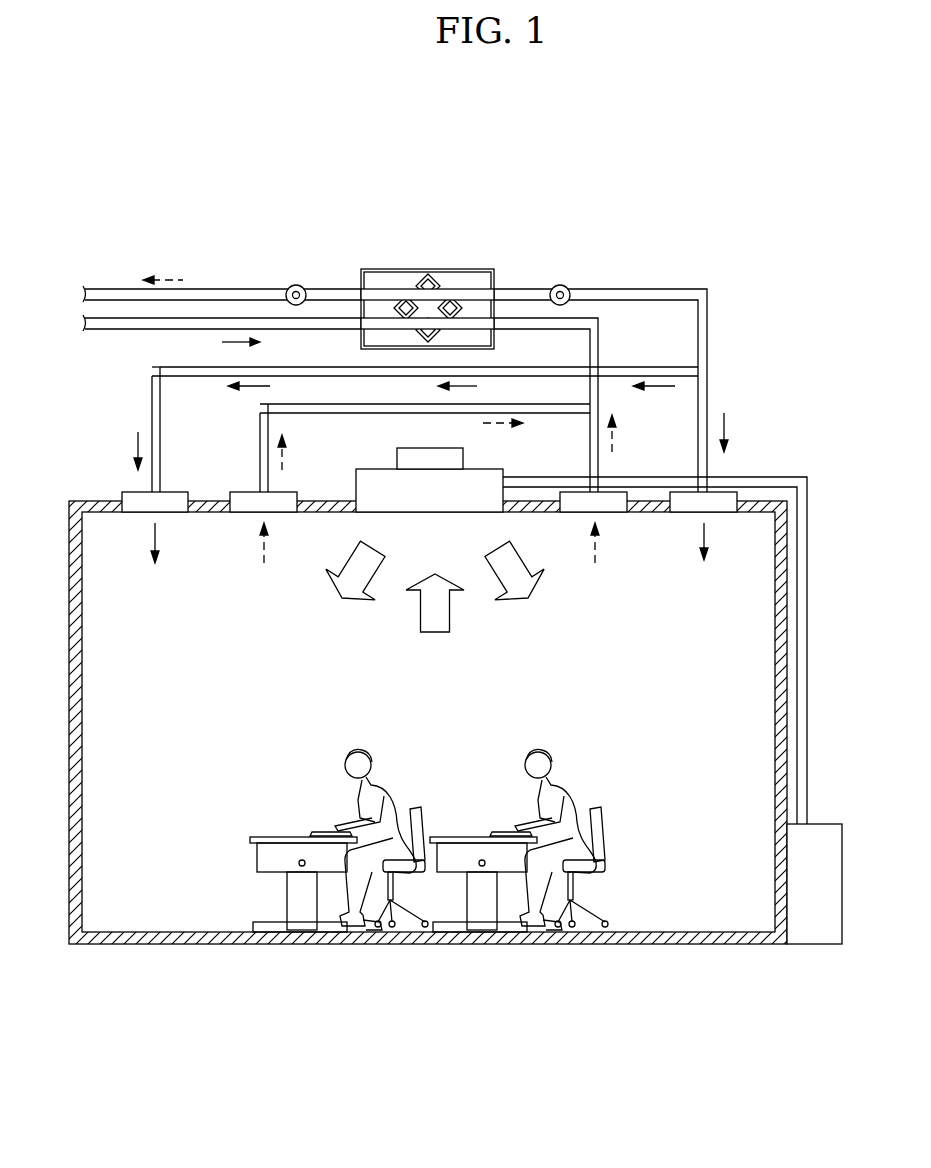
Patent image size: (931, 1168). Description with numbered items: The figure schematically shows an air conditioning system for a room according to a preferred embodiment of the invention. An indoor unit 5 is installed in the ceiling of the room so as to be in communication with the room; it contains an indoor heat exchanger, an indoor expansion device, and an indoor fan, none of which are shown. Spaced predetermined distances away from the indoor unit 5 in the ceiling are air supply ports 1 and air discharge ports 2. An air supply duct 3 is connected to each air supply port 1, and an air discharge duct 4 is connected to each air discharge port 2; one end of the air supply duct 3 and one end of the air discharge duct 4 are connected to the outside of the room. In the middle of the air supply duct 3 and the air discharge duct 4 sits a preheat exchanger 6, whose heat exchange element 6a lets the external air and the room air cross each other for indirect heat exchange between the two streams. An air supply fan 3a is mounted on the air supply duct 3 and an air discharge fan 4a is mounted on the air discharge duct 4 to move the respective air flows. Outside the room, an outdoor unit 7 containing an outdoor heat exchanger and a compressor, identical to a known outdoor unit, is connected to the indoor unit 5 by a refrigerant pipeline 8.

The air supply port 1 is at (170, 507).
The air discharge port 2 is at (282, 507).
The air supply duct 3 is at (110, 330).
The air supply fan 3a is at (560, 284).
The air discharge duct 4 is at (225, 289).
The air discharge fan 4a is at (292, 284).
The indoor unit 5 is at (364, 483).
The preheat exchanger 6 is at (427, 282).
The heat exchange element 6a is at (436, 278).
The outdoor unit 7 is at (836, 887).
The refrigerant pipeline 8 is at (808, 652).